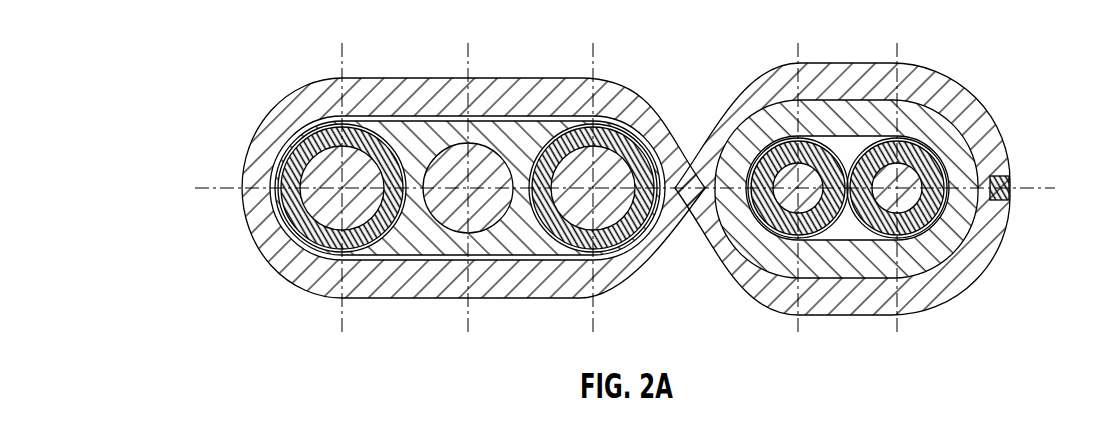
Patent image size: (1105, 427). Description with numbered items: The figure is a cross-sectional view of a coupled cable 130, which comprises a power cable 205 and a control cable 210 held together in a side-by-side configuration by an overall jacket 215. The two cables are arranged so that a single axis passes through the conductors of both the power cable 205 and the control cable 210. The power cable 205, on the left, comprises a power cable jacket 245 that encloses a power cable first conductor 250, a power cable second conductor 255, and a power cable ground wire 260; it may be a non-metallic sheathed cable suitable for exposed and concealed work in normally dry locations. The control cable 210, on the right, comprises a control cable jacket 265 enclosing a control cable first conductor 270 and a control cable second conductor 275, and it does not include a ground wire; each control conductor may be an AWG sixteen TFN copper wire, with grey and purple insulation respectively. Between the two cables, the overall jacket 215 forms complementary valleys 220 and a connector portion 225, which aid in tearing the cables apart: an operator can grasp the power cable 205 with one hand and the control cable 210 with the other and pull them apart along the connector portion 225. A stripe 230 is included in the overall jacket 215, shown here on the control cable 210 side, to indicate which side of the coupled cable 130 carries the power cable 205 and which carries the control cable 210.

The coupled cable 130 is at (500, 24).
The power cable 205 is at (266, 257).
The control cable 210 is at (986, 263).
The overall jacket 215 is at (541, 78).
The complementary valleys 220 is at (692, 104).
The connector portion 225 is at (648, 116).
The stripe 230 is at (1010, 198).
The power cable jacket 245 is at (433, 262).
The power cable first conductor 250 is at (378, 262).
The power cable second conductor 255 is at (635, 252).
The power cable ground wire 260 is at (479, 232).
The control cable jacket 265 is at (848, 262).
The control cable first conductor 270 is at (779, 230).
The control cable second conductor 275 is at (910, 214).